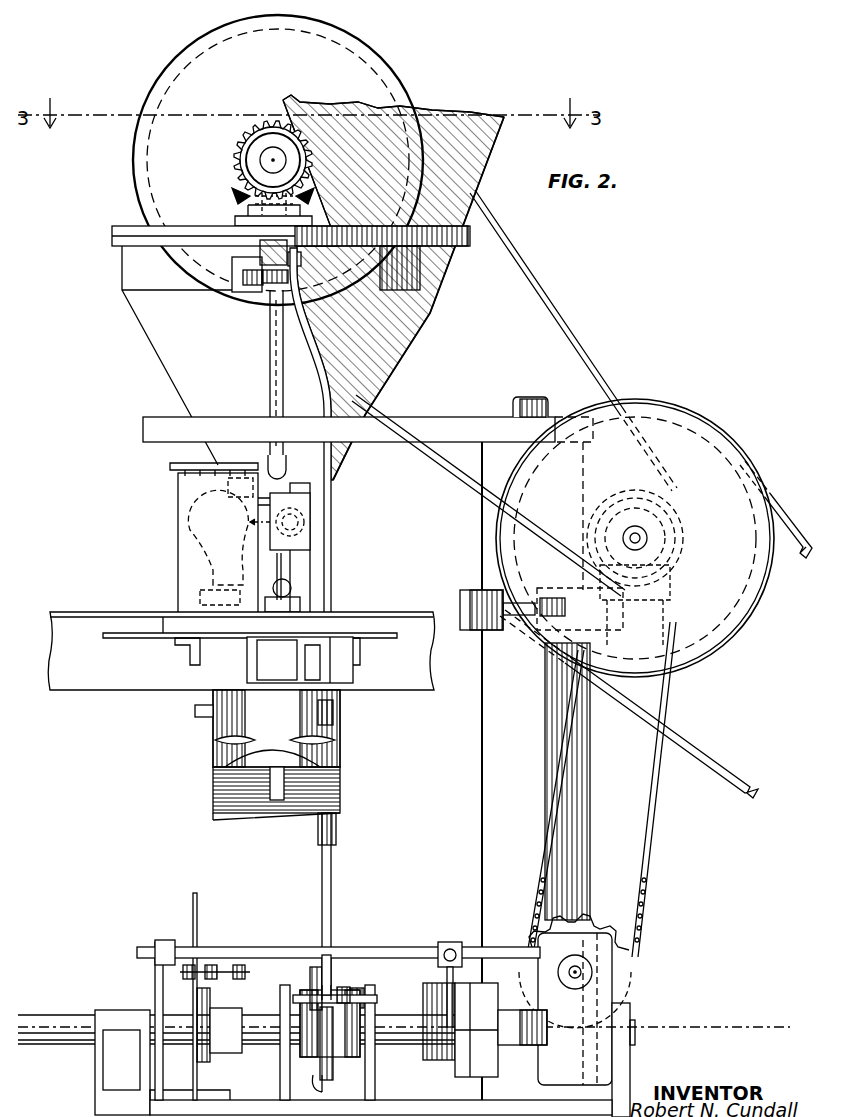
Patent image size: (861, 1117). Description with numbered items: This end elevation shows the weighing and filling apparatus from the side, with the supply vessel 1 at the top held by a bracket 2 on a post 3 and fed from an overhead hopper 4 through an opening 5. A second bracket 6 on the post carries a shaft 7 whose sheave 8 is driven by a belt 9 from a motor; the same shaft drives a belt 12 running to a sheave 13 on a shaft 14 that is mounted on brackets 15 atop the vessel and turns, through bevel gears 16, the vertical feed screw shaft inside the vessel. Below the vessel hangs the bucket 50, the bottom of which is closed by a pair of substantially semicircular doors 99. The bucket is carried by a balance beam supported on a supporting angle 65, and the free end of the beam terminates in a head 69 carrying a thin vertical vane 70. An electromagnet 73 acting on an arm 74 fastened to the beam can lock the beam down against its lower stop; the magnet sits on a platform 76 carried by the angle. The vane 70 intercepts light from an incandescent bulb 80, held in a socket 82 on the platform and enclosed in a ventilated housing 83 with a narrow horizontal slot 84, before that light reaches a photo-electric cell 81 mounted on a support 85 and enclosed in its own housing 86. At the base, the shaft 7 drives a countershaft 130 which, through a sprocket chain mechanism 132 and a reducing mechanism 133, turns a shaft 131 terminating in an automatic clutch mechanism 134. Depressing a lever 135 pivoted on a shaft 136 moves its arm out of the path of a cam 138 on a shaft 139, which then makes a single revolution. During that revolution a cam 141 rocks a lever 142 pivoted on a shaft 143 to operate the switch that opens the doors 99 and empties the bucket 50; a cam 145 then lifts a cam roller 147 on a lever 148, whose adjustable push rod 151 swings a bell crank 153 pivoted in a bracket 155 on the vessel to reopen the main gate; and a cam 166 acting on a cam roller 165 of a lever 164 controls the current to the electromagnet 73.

The supply vessel 1 is at (400, 340).
The bracket 2 is at (442, 417).
The post 3 is at (480, 538).
The overhead hopper 4 is at (484, 178).
The opening 5 is at (462, 219).
The bracket 6 is at (676, 614).
The shaft 7 is at (647, 530).
The sheave 8 is at (672, 420).
The belt 9 is at (775, 503).
The belt 12 is at (526, 282).
The sheave 13 is at (348, 77).
The shaft 14 is at (270, 158).
The brackets 15 is at (248, 160).
The bevel gears 16 is at (238, 196).
The bucket 50 is at (275, 724).
The supporting angle 65 is at (90, 682).
The head 69 is at (291, 587).
The vane 70 is at (277, 566).
The electromagnet 73 is at (285, 670).
The arm 74 is at (300, 603).
The platform 76 is at (226, 640).
The incandescent bulb 80 is at (178, 525).
The photo-electric cell 81 is at (318, 526).
The socket 82 is at (200, 598).
The ventilated housing 83 is at (177, 486).
The narrow horizontal slot 84 is at (250, 520).
The support 85 is at (306, 548).
The housing 86 is at (316, 512).
The doors 99 is at (238, 815).
The countershaft 130 is at (583, 978).
The shaft 131 is at (528, 1060).
The sprocket chain mechanism 132 is at (648, 870).
The reducing mechanism 133 is at (590, 1060).
The automatic clutch mechanism 134 is at (460, 1068).
The lever 135 is at (450, 944).
The shaft 136 is at (378, 950).
The cam 138 is at (447, 1012).
The shaft 139 is at (60, 1008).
The cam 141 is at (212, 996).
The lever 142 is at (210, 965).
The shaft 143 is at (244, 968).
The cam 145 is at (320, 1080).
The cam roller 147 is at (323, 966).
The lever 148 is at (308, 980).
The adjustable push rod 151 is at (332, 466).
The bell crank 153 is at (271, 366).
The bracket 155 is at (258, 285).
The lever 164 is at (343, 982).
The cam roller 165 is at (330, 985).
The cam 166 is at (328, 1055).